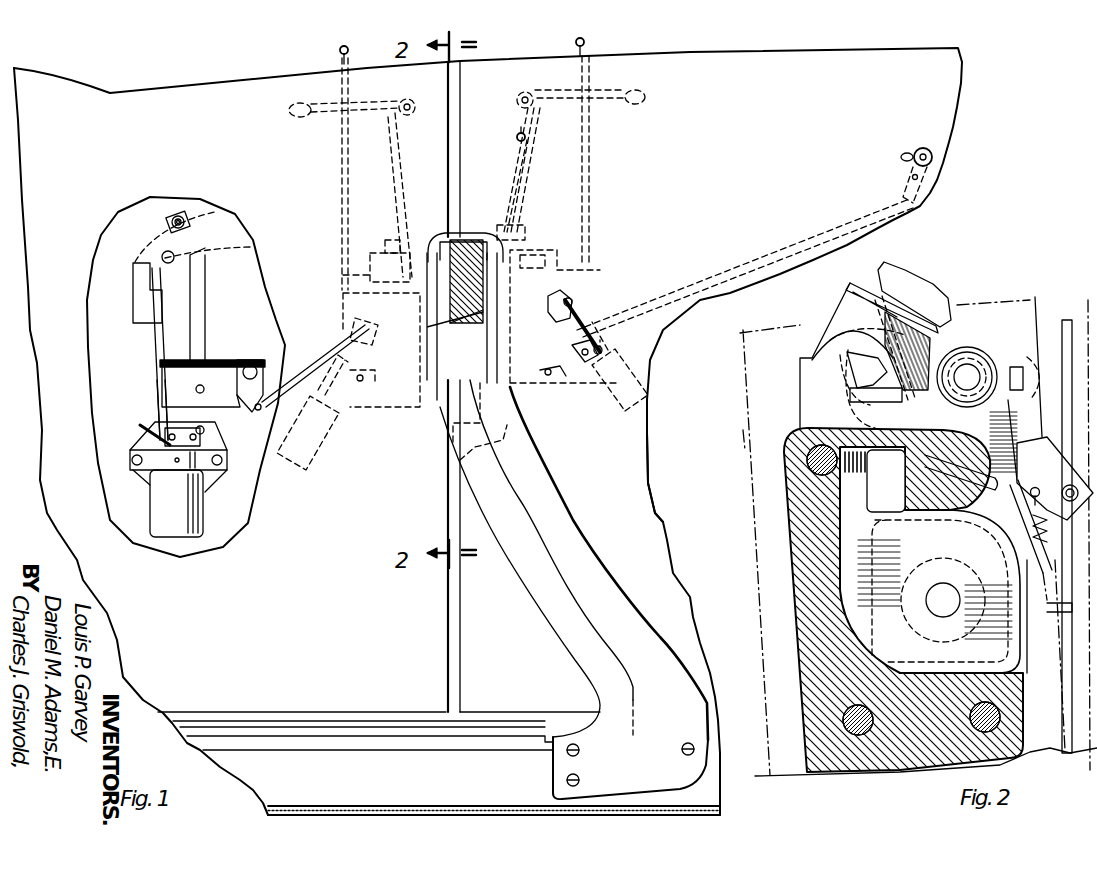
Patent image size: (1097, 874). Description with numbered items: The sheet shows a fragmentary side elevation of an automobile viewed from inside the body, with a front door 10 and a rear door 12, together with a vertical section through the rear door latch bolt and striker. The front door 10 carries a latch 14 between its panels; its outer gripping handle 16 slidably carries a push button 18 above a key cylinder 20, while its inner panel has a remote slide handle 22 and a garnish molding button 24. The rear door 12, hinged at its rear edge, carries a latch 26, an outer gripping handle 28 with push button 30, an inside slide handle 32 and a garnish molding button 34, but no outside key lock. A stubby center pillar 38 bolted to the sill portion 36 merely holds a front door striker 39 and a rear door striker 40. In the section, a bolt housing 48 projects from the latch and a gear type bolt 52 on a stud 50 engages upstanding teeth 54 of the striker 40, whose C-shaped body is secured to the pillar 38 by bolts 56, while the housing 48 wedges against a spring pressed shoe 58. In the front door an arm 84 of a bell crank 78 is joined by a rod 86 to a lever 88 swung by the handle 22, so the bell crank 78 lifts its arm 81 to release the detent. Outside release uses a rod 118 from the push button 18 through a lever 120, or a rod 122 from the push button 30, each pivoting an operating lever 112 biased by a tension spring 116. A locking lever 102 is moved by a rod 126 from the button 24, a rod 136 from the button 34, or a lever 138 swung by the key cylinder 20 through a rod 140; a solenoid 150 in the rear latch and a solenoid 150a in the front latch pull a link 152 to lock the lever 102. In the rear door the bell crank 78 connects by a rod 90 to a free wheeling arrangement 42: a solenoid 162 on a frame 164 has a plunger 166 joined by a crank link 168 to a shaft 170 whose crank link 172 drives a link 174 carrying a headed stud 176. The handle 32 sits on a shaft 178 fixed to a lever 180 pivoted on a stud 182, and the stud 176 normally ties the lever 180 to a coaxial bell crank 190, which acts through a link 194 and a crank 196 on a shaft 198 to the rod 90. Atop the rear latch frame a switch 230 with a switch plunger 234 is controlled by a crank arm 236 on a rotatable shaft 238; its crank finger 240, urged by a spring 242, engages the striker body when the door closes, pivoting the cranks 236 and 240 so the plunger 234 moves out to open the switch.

In FIG. 1, the front door 10 is at (652, 513).
In FIG. 1, the rear door 12 is at (42, 430).
In FIG. 1, the latch 14 is at (554, 387).
In FIG. 1, the gripping handle 16 is at (620, 88).
In FIG. 1, the push button 18 is at (517, 98).
In FIG. 1, the key cylinder 20 is at (516, 137).
In FIG. 1, the slide handle 22 is at (923, 148).
In FIG. 1, the garnish molding button 24 is at (587, 42).
In FIG. 1, the latch 26 is at (396, 417).
In FIG. 1, the gripping handle 28 is at (312, 104).
In FIG. 1, the push button 30 is at (411, 100).
In FIG. 1, the slide handle 32 is at (210, 210).
In FIG. 1, the garnish molding button 34 is at (339, 50).
In FIG. 1, the sill portion 36 is at (352, 730).
In FIG. 1, the center pillar 38 is at (535, 568).
In FIG. 2, the center pillar 38 is at (750, 440).
In FIG. 1, the front door striker 39 is at (490, 246).
In FIG. 1, the rear door striker 40 is at (442, 328).
In FIG. 2, the rear door striker 40 is at (789, 613).
In FIG. 1, the free wheeling arrangement 42 is at (220, 489).
In FIG. 2, the bolt housing 48 is at (1032, 540).
In FIG. 2, the stud 50 is at (925, 595).
In FIG. 2, the gear type bolt 52 is at (1015, 645).
In FIG. 2, the teeth 54 is at (1005, 675).
In FIG. 2, the bolts 56 is at (810, 462).
In FIG. 2, the spring pressed shoe 58 is at (898, 470).
In FIG. 1, the bell crank 78 is at (366, 380).
In FIG. 1, the arm 81 is at (545, 372).
In FIG. 1, the arm 84 is at (604, 332).
In FIG. 1, the rod 86 is at (710, 266).
In FIG. 1, the lever 88 is at (903, 182).
In FIG. 1, the rod 90 is at (330, 360).
In FIG. 1, the locking lever 102 is at (598, 285).
In FIG. 2, the operating lever 112 is at (1072, 505).
In FIG. 2, the tension spring 116 is at (1050, 545).
In FIG. 1, the rod 118 is at (520, 168).
In FIG. 1, the lever 120 is at (545, 100).
In FIG. 1, the rod 122 is at (405, 175).
In FIG. 1, the rod 126 is at (592, 133).
In FIG. 1, the rod 136 is at (338, 170).
In FIG. 2, the rod 136 is at (1080, 318).
In FIG. 1, the lever 138 is at (530, 140).
In FIG. 1, the rod 140 is at (530, 168).
In FIG. 1, the solenoid 150 is at (310, 455).
In FIG. 1, the solenoid 150a is at (620, 418).
In FIG. 1, the link 152 is at (350, 340).
In FIG. 1, the solenoid 162 is at (170, 498).
In FIG. 1, the frame 164 is at (150, 435).
In FIG. 1, the solenoid plunger 166 is at (222, 465).
In FIG. 1, the crank link 168 is at (206, 428).
In FIG. 1, the shaft 170 is at (203, 440).
In FIG. 1, the crank link 172 is at (160, 412).
In FIG. 1, the link 174 is at (155, 342).
In FIG. 1, the headed stud 176 is at (140, 296).
In FIG. 1, the shaft 178 is at (178, 215).
In FIG. 1, the lever 180 is at (165, 226).
In FIG. 1, the stud 182 is at (180, 258).
In FIG. 1, the bell crank 190 is at (250, 248).
In FIG. 1, the link 194 is at (207, 322).
In FIG. 1, the crank 196 is at (212, 371).
In FIG. 1, the shaft 198 is at (261, 373).
In FIG. 1, the switch 230 is at (398, 240).
In FIG. 2, the switch 230 is at (910, 300).
In FIG. 2, the switch plunger 234 is at (880, 332).
In FIG. 2, the switch actuating crank arm 236 is at (855, 405).
In FIG. 2, the rotatable shaft 238 is at (970, 375).
In FIG. 2, the actuating crank finger 240 is at (1055, 478).
In FIG. 2, the spring 242 is at (1029, 371).